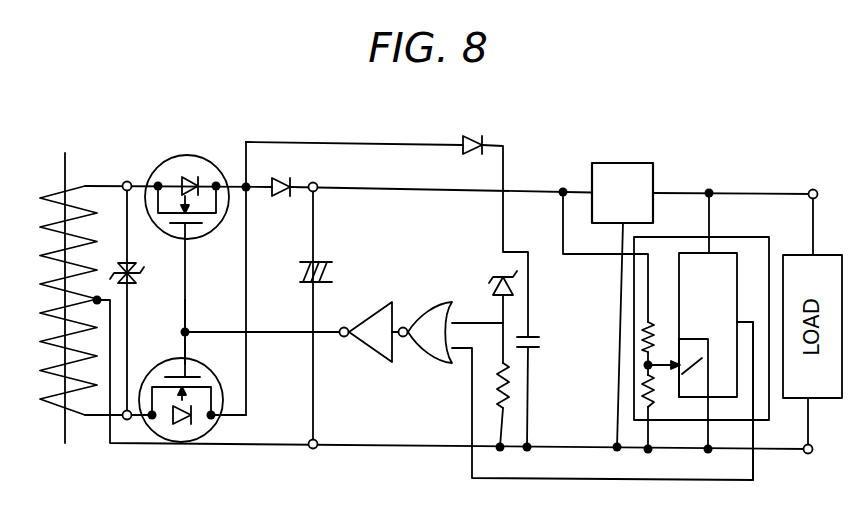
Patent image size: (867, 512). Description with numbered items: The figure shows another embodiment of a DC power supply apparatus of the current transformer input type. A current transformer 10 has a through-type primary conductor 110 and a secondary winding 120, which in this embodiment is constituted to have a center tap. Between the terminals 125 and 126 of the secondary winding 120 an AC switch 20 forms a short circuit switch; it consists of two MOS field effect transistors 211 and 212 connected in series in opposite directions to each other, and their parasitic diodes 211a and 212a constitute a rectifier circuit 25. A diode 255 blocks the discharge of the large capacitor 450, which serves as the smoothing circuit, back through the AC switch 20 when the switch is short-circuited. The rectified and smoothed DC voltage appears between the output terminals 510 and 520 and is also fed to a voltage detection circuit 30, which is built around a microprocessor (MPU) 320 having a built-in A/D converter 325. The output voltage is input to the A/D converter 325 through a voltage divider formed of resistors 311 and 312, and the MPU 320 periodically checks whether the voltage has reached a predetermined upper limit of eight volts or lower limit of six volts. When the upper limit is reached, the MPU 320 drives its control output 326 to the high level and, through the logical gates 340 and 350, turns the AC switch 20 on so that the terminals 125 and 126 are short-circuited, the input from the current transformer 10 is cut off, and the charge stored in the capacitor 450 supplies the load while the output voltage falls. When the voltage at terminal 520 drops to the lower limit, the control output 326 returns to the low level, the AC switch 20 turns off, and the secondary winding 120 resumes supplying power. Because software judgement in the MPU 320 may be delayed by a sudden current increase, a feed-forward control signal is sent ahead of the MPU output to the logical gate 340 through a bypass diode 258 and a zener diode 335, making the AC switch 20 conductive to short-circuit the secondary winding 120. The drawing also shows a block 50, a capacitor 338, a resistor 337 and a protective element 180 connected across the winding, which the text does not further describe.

The current transformer 10 is at (88, 170).
The through-type primary conductor 110 is at (65, 166).
The secondary winding 120 is at (96, 266).
The terminal of the secondary winding 126 is at (127, 181).
The terminal of the secondary winding 125 is at (125, 420).
The bidirectional zener diode 180 is at (135, 285).
The MOS field effect transistor 212 is at (205, 160).
The parasitic diode 212a is at (183, 177).
The MOS field effect transistor 211 is at (218, 367).
The parasitic diode 211a is at (182, 426).
The AC switch 20 is at (203, 280).
The rectifier circuit 25 is at (224, 305).
The diode 255 is at (291, 182).
The diode for a bypass 258 is at (466, 137).
The output terminal 520 is at (322, 186).
The output terminal 510 is at (313, 450).
The capacitor 450 is at (329, 265).
The logical gate 350 is at (385, 303).
The logical gate 340 is at (444, 303).
The zener diode 335 is at (515, 292).
The capacitor 338 is at (533, 336).
The resistor 337 is at (510, 383).
The voltage regulator 50 is at (600, 163).
The voltage detection circuit 30 is at (727, 236).
The control output 326 is at (755, 398).
The microprocessor (MPU) 320 is at (684, 252).
The A/D converter 325 is at (692, 398).
The resistor 312 is at (640, 344).
The resistor 311 is at (640, 400).